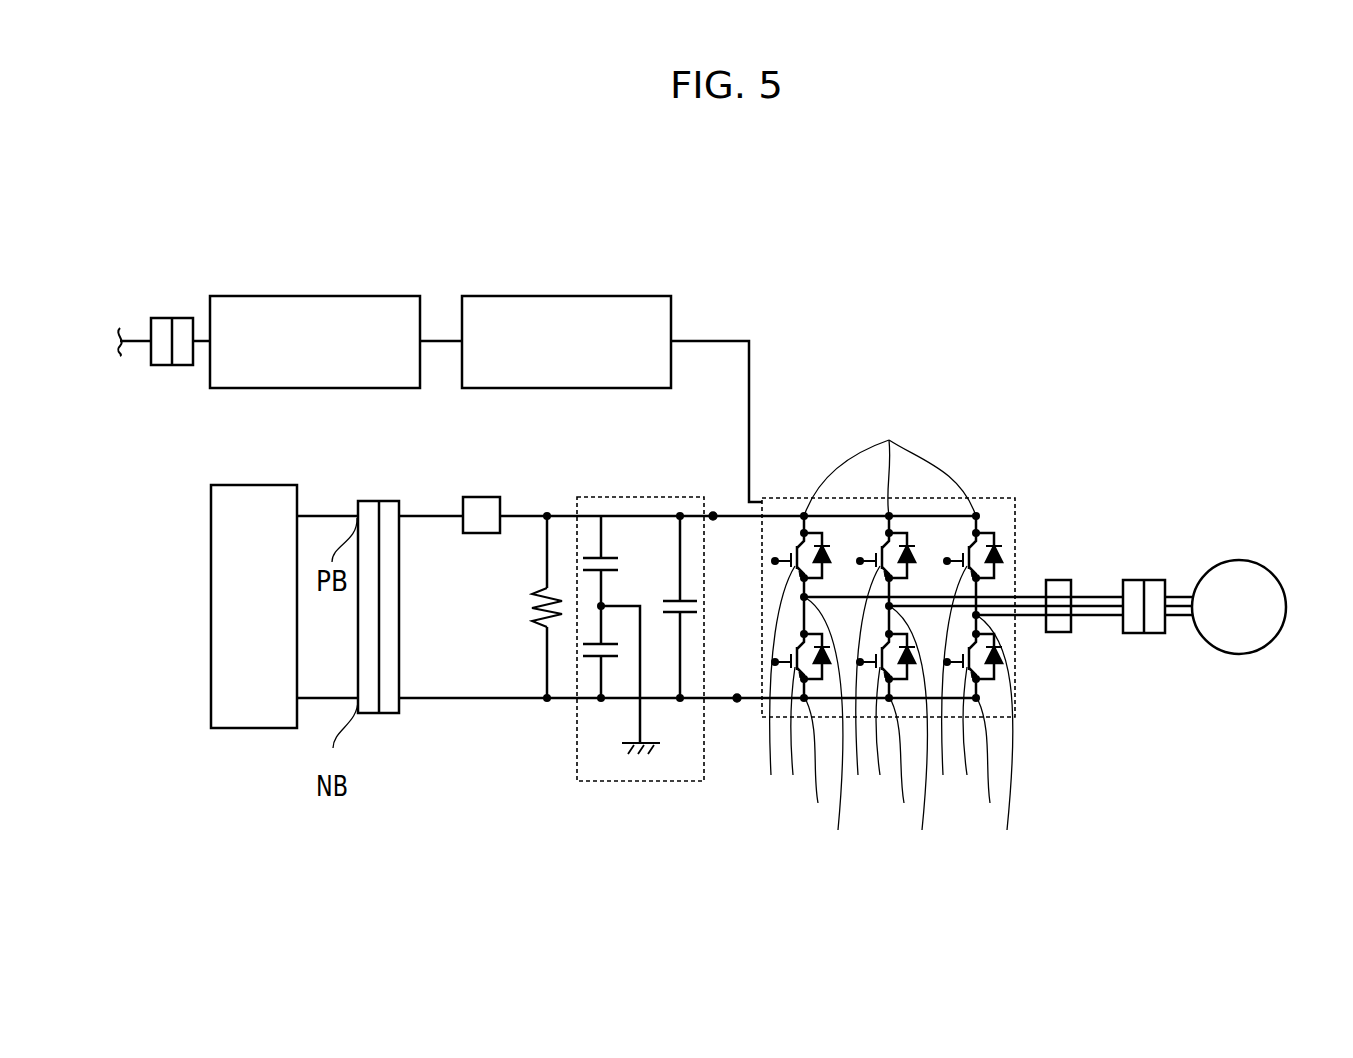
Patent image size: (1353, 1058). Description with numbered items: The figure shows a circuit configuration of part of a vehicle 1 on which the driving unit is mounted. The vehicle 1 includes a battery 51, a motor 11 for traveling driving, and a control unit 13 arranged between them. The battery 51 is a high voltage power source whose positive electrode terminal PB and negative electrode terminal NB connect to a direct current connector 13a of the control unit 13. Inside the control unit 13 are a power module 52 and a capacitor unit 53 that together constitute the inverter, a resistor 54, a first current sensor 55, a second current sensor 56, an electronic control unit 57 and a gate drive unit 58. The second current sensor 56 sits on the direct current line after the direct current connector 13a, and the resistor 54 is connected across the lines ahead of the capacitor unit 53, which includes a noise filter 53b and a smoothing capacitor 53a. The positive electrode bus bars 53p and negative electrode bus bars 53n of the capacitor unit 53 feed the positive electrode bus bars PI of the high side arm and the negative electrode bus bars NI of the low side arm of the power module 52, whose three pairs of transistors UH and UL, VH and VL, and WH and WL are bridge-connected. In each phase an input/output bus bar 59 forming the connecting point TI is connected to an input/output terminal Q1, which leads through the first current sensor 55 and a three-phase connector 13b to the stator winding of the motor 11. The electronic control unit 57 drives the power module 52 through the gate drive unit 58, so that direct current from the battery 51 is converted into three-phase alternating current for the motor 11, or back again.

The vehicle 1 is at (948, 264).
The control unit 13 is at (1098, 264).
The electronic control unit 57 is at (316, 296).
The gate drive unit 58 is at (566, 296).
The battery 51 is at (253, 485).
The direct current connector 13a is at (368, 501).
The second current sensor 56 is at (480, 497).
The resistor 54 is at (555, 622).
The capacitor unit 53 is at (642, 497).
The noise filter 53b is at (607, 572).
The smoothing capacitor 53a is at (668, 614).
The positive electrode bus bars 53p is at (713, 518).
The negative electrode bus bars 53n is at (737, 700).
The power module 52 is at (997, 497).
The first current sensor 55 is at (1060, 636).
The input/output bus bar 59 is at (1097, 602).
The input/output terminal Q1 is at (1100, 612).
The 3-phase connector 13b is at (1155, 636).
The motor 11 is at (1240, 560).